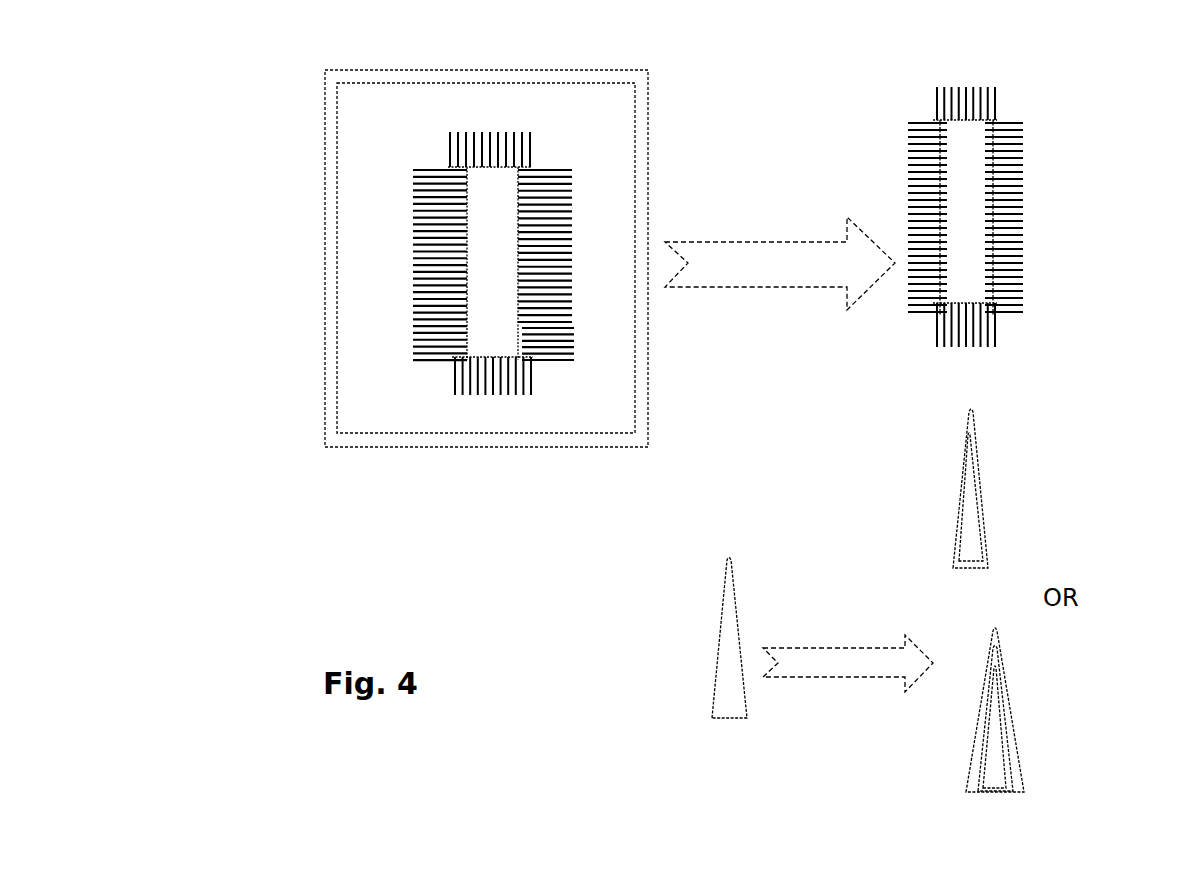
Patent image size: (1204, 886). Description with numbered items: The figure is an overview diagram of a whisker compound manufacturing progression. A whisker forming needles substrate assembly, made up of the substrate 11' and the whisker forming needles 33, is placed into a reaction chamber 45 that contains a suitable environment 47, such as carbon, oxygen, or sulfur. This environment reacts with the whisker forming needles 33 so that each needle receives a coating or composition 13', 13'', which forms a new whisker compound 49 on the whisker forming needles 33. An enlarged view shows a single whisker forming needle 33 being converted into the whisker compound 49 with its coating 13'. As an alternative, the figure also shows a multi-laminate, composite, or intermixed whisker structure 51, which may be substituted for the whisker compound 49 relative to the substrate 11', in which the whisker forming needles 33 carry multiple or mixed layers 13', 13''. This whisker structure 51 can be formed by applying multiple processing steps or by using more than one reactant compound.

The substrate 11' is at (778, 194).
The whisker forming needle 33 is at (572, 205).
The reaction chamber 45 is at (330, 355).
The environment 47 is at (362, 232).
The whisker compound 49 is at (1030, 160).
The coating or composition 13' is at (1038, 600).
The coating or composition 13'' is at (1055, 718).
The whisker structure 51 is at (1048, 720).